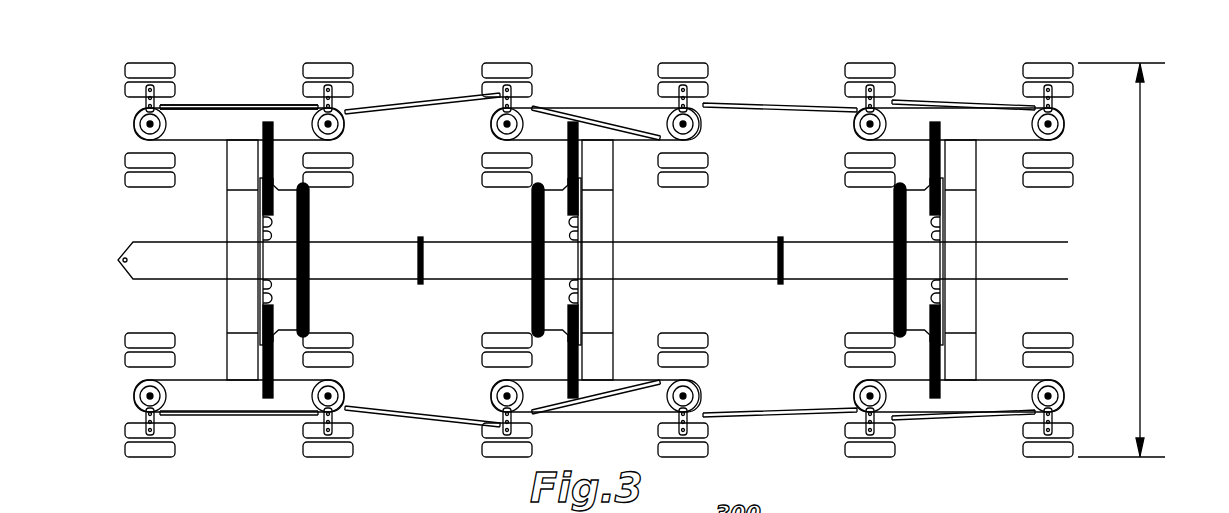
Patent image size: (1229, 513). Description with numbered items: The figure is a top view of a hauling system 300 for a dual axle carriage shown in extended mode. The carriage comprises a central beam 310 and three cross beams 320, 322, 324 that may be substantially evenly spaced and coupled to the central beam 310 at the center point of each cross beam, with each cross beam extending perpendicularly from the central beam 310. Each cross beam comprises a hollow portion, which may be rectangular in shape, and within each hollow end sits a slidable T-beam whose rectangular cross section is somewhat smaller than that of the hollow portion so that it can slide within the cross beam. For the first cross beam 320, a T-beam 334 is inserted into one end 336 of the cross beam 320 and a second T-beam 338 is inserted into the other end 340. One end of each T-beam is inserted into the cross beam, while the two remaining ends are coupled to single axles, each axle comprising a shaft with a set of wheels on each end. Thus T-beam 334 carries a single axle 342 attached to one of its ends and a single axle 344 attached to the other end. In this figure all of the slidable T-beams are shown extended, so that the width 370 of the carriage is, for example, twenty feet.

The hauling system 300 is at (610, 66).
The central beam 310 is at (720, 238).
The cross beam 320 is at (227, 293).
The cross beam 322 is at (620, 300).
The cross beam 324 is at (973, 293).
The T-beam 334 is at (228, 150).
The end of the cross beam 336 is at (227, 205).
The T-beam 338 is at (230, 353).
The end of the cross beam 340 is at (227, 335).
The single axle 342 is at (137, 113).
The single axle 344 is at (337, 115).
The width 370 is at (1140, 225).